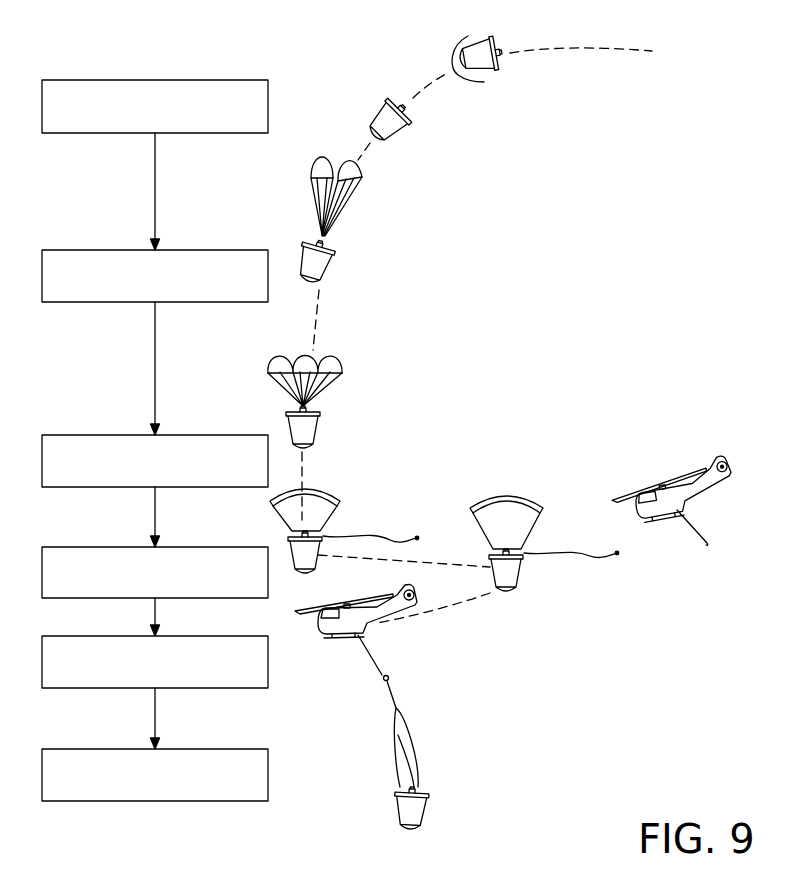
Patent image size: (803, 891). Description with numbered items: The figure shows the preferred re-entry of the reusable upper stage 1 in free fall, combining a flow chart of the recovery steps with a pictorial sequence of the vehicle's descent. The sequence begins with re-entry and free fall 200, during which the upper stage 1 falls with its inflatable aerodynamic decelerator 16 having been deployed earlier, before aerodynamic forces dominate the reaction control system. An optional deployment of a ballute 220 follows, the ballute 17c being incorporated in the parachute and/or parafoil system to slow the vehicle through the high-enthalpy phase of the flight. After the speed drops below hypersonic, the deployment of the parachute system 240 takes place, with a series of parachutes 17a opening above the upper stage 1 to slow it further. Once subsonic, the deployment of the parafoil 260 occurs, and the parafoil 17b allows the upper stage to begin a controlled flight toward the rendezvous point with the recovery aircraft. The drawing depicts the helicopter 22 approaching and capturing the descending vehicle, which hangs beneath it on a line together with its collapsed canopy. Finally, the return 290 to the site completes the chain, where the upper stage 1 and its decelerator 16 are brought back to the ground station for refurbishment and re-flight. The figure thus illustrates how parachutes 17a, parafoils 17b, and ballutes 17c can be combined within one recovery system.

The upper stage 1 is at (480, 59).
The decelerator 16 is at (418, 805).
The parachutes 17a is at (327, 370).
The parafoil 17b is at (340, 495).
The ballute 17c is at (362, 178).
The helicopter 22 is at (685, 468).
The re-entry and free fall 200 is at (155, 384).
The deployment of ballute 220 is at (155, 276).
The deployment of parachutes system 240 is at (155, 461).
The deployment of parafoil at subsonic 260 is at (155, 572).
The return to site 290 is at (155, 775).